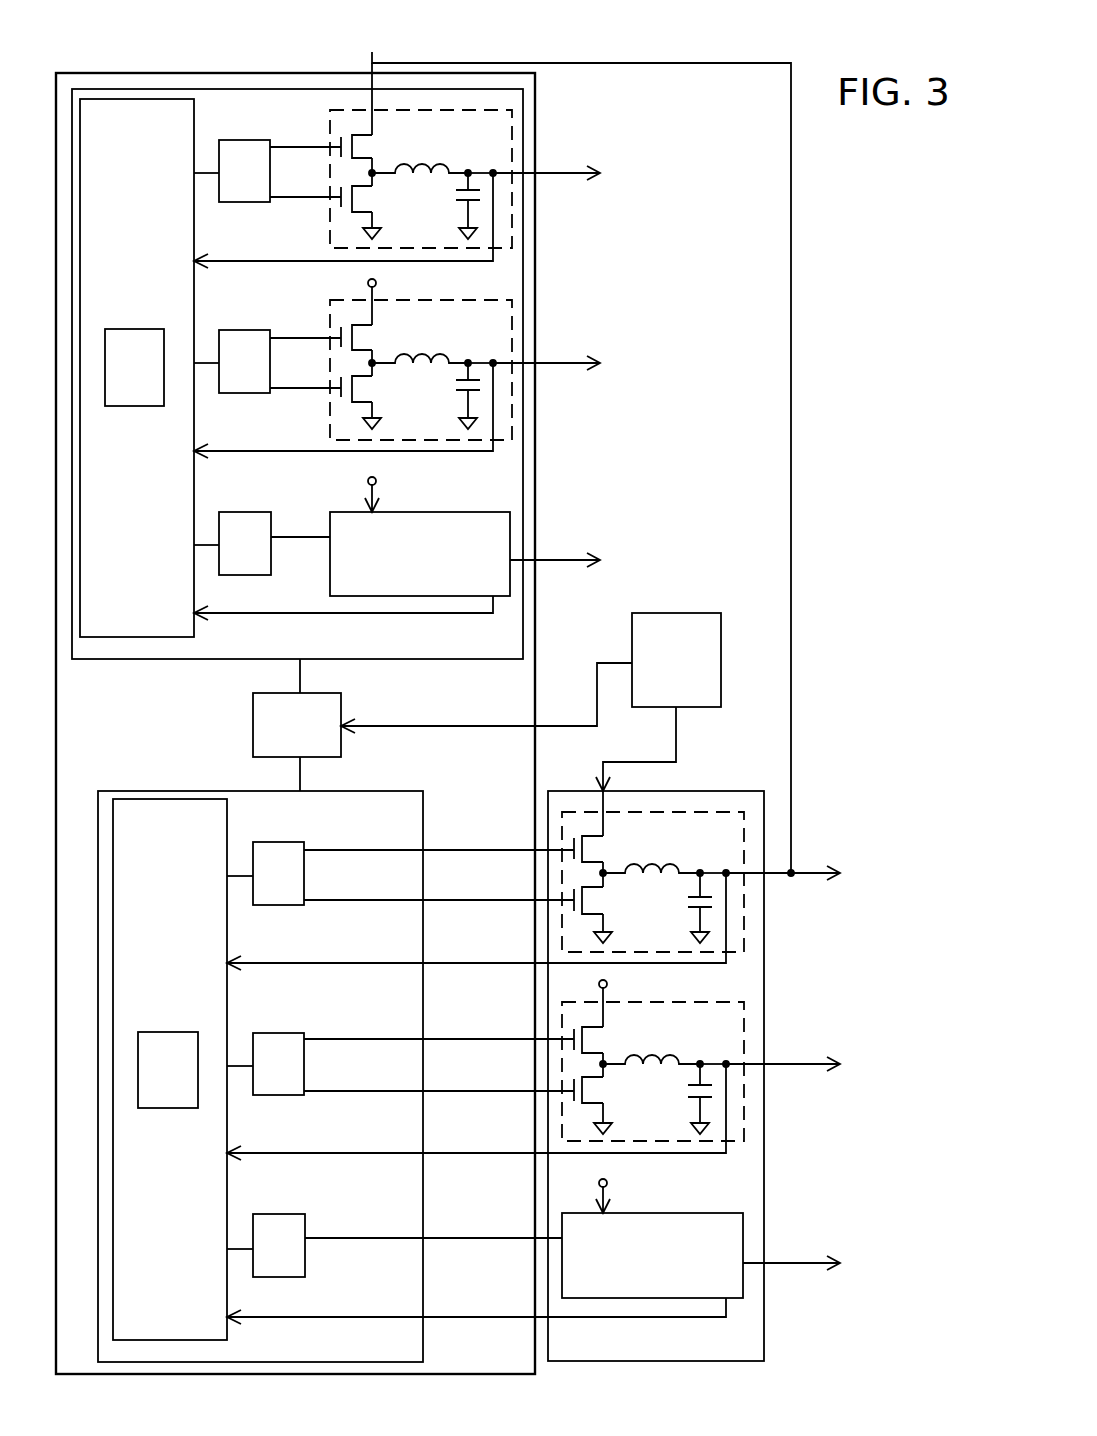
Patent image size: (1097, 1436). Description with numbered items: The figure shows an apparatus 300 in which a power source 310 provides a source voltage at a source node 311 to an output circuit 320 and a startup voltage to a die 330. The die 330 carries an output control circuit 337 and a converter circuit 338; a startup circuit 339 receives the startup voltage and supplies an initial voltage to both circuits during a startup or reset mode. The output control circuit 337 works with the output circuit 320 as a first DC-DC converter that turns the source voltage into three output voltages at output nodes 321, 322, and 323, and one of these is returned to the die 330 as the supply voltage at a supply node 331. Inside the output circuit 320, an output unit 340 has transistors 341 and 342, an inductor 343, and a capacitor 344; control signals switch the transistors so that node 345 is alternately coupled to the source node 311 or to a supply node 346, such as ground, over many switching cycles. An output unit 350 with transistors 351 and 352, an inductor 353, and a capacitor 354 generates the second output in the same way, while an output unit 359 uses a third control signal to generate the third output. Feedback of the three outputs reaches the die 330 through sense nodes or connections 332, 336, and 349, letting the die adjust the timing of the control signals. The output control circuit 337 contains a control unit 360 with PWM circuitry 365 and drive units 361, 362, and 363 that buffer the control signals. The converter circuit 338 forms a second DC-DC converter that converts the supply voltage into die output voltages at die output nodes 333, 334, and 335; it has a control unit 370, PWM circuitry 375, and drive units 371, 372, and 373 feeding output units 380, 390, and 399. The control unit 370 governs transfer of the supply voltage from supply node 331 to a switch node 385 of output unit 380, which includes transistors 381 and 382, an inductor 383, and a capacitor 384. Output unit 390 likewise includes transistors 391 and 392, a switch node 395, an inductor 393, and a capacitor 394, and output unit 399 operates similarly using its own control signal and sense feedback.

The apparatus 300 is at (845, 188).
The power source 310 is at (683, 613).
The source node 311 is at (603, 771).
The output circuit 320 is at (727, 791).
The output node 321 is at (821, 873).
The output node 322 is at (821, 1064).
The output node 323 is at (821, 1263).
The die 330 is at (83, 750).
The supply node 331 is at (367, 64).
The sense node 332 is at (488, 964).
The die output node 333 is at (579, 171).
The die output node 334 is at (579, 361).
The die output node 335 is at (579, 559).
The sense node 336 is at (488, 1154).
The output control circuit 337 is at (199, 791).
The converter circuit 338 is at (160, 660).
The startup circuit 339 is at (258, 693).
The output unit 340 is at (718, 811).
The transistor 341 is at (594, 849).
The transistor 342 is at (594, 900).
The inductor 343 is at (651, 859).
The capacitor 344 is at (686, 906).
The node 345 is at (590, 874).
The supply node 346 is at (499, 674).
The sense node 349 is at (488, 1318).
The output unit 350 is at (718, 1001).
The transistor 351 is at (594, 1040).
The transistor 352 is at (594, 1090).
The inductor 353 is at (651, 1050).
The capacitor 354 is at (686, 1097).
The output unit 359 is at (718, 1213).
The control unit 360 is at (227, 807).
The drive unit 361 is at (287, 842).
The drive unit 362 is at (287, 1032).
The drive unit 363 is at (287, 1213).
The PWM circuitry 365 is at (175, 1032).
The control unit 370 is at (194, 102).
The drive unit 371 is at (252, 140).
The drive unit 372 is at (252, 330).
The drive unit 373 is at (252, 510).
The PWM circuitry 375 is at (144, 329).
The output unit 380 is at (448, 110).
The transistor 381 is at (363, 147).
The transistor 382 is at (362, 199).
The inductor 383 is at (420, 158).
The capacitor 384 is at (454, 204).
The switch node 385 is at (372, 175).
The output unit 390 is at (448, 299).
The transistor 391 is at (363, 337).
The transistor 392 is at (362, 389).
The inductor 393 is at (420, 348).
The capacitor 394 is at (454, 394).
The switch node 395 is at (359, 363).
The output unit 399 is at (446, 511).